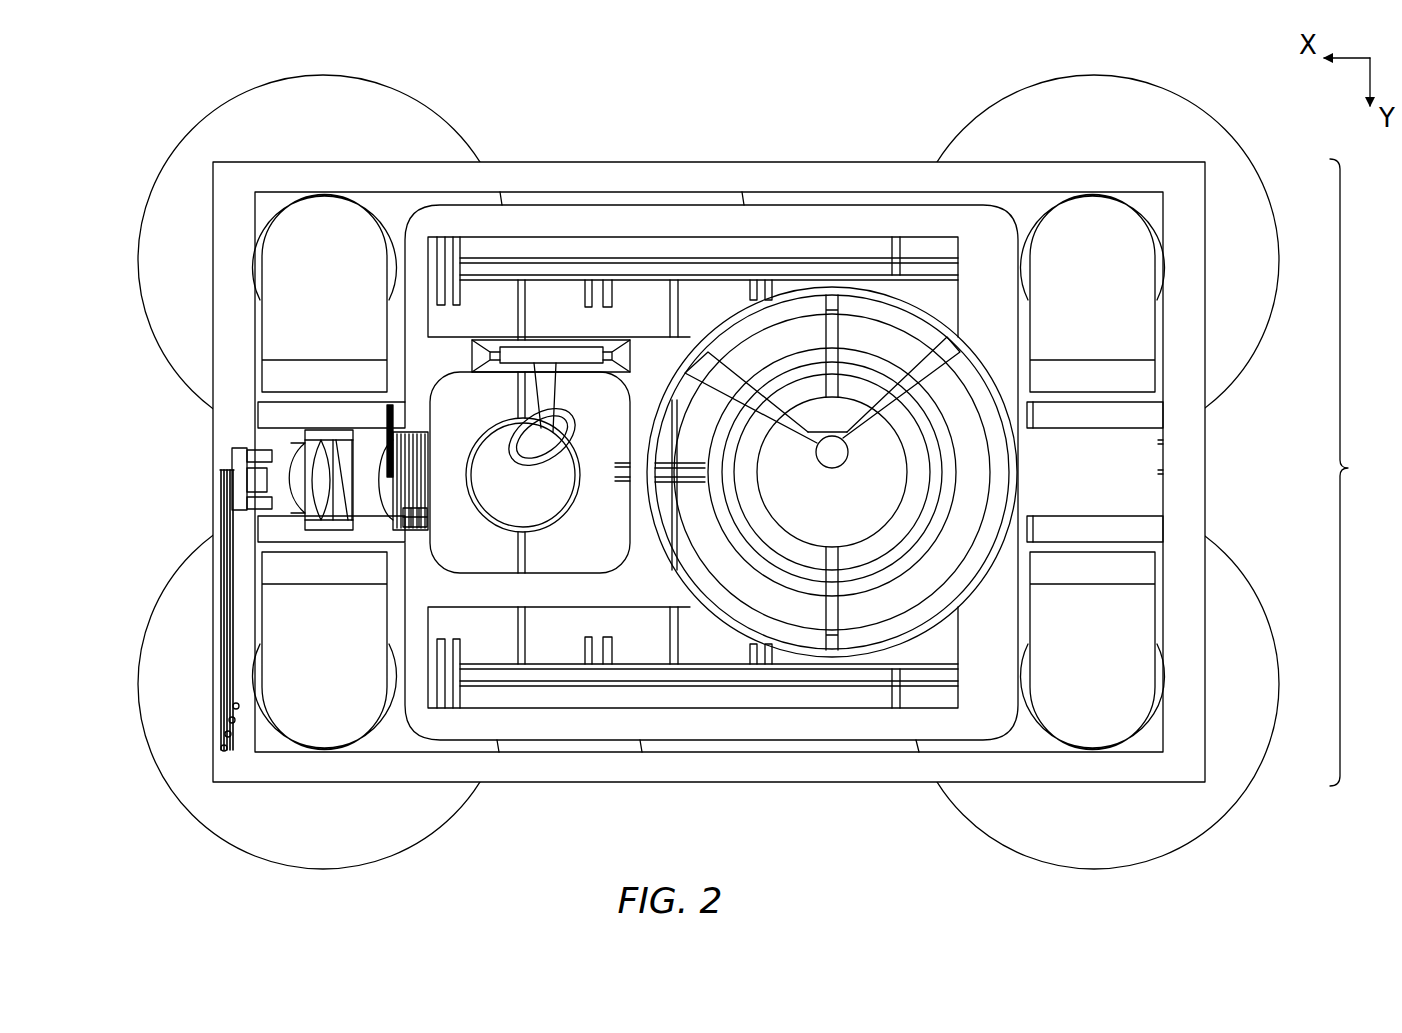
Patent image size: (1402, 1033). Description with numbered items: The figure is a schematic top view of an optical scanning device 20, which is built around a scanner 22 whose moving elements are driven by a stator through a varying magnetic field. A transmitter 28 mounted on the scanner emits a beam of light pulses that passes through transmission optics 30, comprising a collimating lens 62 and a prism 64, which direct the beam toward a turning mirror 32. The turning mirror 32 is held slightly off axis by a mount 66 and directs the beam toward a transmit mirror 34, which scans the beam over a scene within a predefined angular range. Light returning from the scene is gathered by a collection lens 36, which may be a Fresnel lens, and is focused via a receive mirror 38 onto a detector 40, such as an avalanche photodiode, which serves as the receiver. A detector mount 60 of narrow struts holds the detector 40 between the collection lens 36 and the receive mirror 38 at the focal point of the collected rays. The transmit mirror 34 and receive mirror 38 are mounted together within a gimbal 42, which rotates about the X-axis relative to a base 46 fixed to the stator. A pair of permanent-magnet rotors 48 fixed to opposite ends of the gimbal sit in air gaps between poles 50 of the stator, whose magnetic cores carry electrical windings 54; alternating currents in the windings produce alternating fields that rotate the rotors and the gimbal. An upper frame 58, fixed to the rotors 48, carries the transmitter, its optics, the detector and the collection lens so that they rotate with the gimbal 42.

The optical scanning device 20 is at (141, 106).
The scanner 22 is at (1356, 472).
The transmitter 28 is at (258, 483).
The transmission optics 30 is at (318, 428).
The turning mirror 32 is at (543, 462).
The transmit mirror 34 is at (530, 472).
The collection lens 36 is at (787, 632).
The receive mirror 38 is at (853, 557).
The detector 40 is at (836, 458).
The gimbal 42 is at (900, 716).
The base 46 is at (807, 770).
The rotors 48 is at (1148, 413).
The poles 50 is at (1138, 320).
The electrical windings 54 is at (428, 120).
The upper frame 58 is at (566, 593).
The detector mount 60 is at (727, 373).
The collimating lens 62 is at (257, 447).
The prism 64 is at (345, 535).
The mount 66 is at (563, 340).